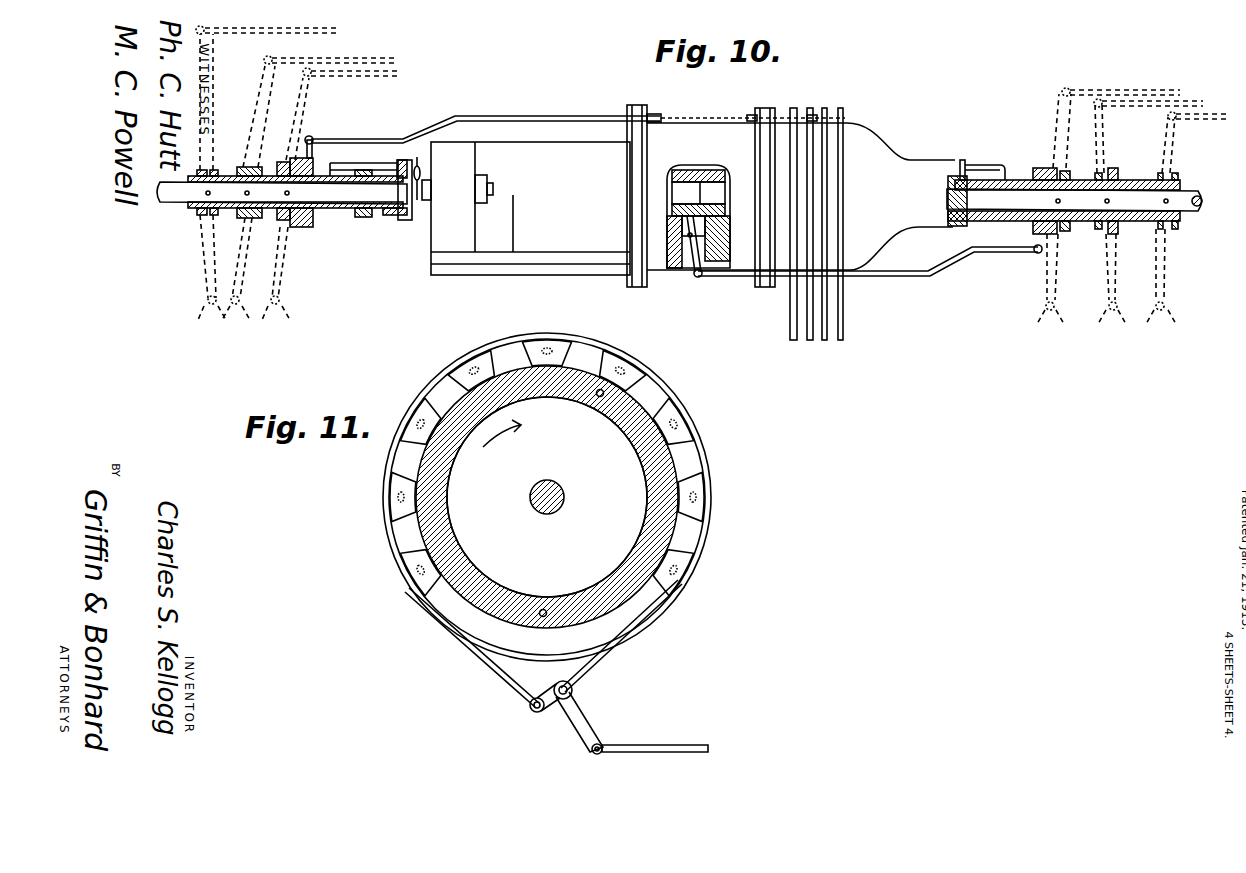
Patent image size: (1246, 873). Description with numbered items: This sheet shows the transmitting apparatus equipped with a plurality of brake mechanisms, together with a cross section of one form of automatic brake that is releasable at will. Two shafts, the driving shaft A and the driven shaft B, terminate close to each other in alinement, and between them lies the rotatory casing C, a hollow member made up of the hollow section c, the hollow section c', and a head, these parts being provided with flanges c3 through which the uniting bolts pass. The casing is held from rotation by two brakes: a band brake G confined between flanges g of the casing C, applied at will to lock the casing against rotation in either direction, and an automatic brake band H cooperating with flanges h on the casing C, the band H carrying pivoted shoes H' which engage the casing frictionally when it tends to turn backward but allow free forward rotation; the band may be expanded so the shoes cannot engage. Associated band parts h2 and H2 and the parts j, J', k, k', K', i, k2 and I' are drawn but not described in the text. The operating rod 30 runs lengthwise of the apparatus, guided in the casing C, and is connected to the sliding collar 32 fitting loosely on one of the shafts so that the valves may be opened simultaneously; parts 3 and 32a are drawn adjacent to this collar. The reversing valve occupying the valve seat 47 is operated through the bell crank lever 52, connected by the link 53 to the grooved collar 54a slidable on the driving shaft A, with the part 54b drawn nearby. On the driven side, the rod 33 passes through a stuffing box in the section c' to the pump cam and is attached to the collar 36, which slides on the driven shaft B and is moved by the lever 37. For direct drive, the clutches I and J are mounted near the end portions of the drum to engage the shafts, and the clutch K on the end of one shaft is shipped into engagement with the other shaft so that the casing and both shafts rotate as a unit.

In FIG. 10, the driving shaft A is at (178, 192).
In FIG. 10, the sleeve j is at (190, 212).
In FIG. 10, the clutch J is at (381, 210).
In FIG. 10, the collar J' is at (181, 244).
In FIG. 10, the collar 3 is at (330, 222).
In FIG. 10, the sliding collar 32 is at (300, 228).
In FIG. 10, the hub flange 32a is at (285, 290).
In FIG. 10, the grooved collar 54a is at (320, 172).
In FIG. 10, the wires 54b is at (287, 322).
In FIG. 10, the link 53 is at (360, 163).
In FIG. 10, the bell crank lever 52 is at (402, 147).
In FIG. 10, the operating rod 30 is at (498, 118).
In FIG. 10, the valve seat 47 is at (428, 215).
In FIG. 10, the casing C is at (570, 138).
In FIG. 11, the casing C is at (698, 460).
In FIG. 10, the hollow section c is at (535, 279).
In FIG. 10, the flange c3 is at (648, 115).
In FIG. 10, the rod h2 is at (785, 118).
In FIG. 11, the rod h2 is at (705, 752).
In FIG. 10, the flange g is at (793, 108).
In FIG. 11, the flange g is at (435, 387).
In FIG. 10, the flange h is at (845, 118).
In FIG. 10, the band brake G is at (792, 340).
In FIG. 10, the brake band H is at (870, 349).
In FIG. 11, the brake band H is at (554, 468).
In FIG. 10, the clutch K is at (704, 154).
In FIG. 10, the driven shaft B is at (720, 203).
In FIG. 11, the driven shaft B is at (565, 500).
In FIG. 10, the lever k is at (673, 274).
In FIG. 10, the rod k' is at (870, 279).
In FIG. 10, the hollow section c' is at (896, 254).
In FIG. 11, the hollow section c' is at (360, 464).
In FIG. 10, the clutch I is at (954, 214).
In FIG. 10, the lever K' is at (1011, 291).
In FIG. 10, the rod 33 is at (978, 162).
In FIG. 10, the sleeve i is at (1148, 180).
In FIG. 10, the collar k2 is at (1045, 168).
In FIG. 10, the collar 36 is at (1092, 176).
In FIG. 10, the lever 37 is at (1095, 275).
In FIG. 10, the flange I' is at (1172, 262).
In FIG. 11, the pivoted shoe H' is at (546, 505).
In FIG. 11, the lever H2 is at (582, 722).